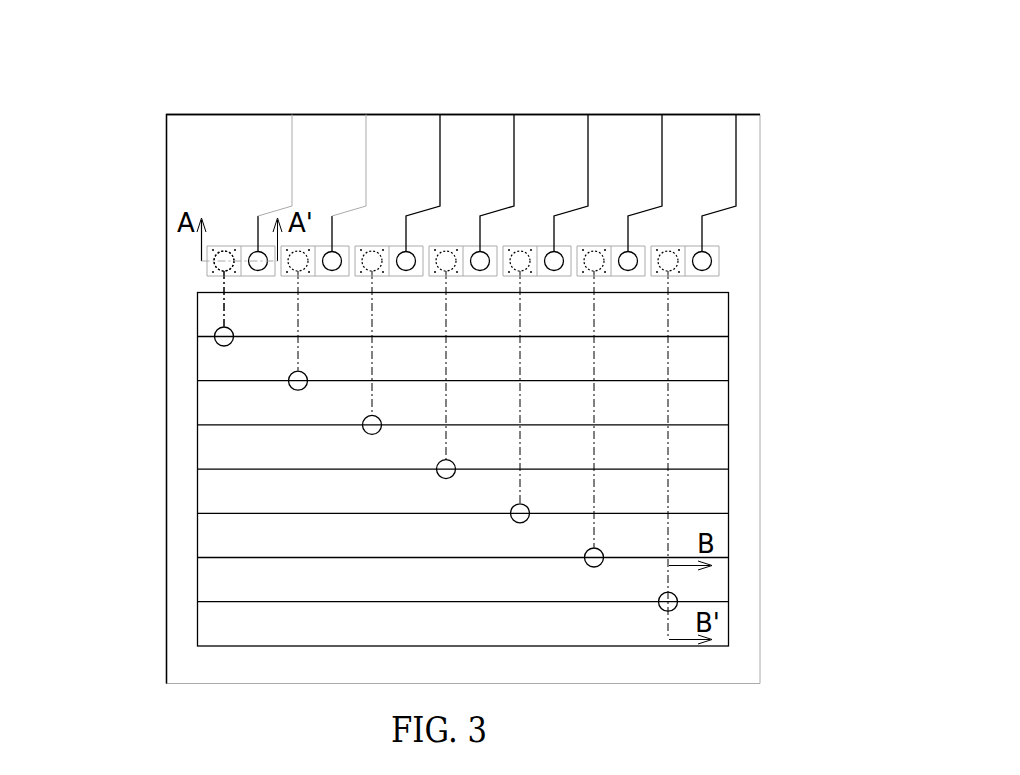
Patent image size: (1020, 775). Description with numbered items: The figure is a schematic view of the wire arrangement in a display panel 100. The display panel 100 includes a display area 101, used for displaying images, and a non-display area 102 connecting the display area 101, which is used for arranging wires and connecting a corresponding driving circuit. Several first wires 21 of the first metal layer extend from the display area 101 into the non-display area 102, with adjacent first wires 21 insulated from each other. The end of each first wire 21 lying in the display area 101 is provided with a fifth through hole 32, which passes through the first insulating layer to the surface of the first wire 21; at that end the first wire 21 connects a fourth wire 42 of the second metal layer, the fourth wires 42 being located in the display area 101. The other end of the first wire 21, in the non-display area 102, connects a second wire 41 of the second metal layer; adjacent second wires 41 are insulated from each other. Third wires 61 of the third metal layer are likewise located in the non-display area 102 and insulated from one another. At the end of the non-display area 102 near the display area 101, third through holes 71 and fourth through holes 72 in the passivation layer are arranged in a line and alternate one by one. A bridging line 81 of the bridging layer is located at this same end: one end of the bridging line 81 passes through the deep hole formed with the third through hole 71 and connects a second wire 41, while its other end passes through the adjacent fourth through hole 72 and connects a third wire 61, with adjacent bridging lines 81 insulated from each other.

The display panel 100 is at (475, 92).
The display area 101 is at (207, 492).
The non-display area 102 is at (208, 157).
The first wire 21 is at (670, 496).
The fifth through hole 32 is at (677, 595).
The second wire 41 is at (224, 268).
The fourth wire 42 is at (245, 601).
The third wire 61 is at (737, 172).
The third through hole 71 is at (675, 270).
The fourth through hole 72 is at (721, 273).
The bridging line 81 is at (721, 250).